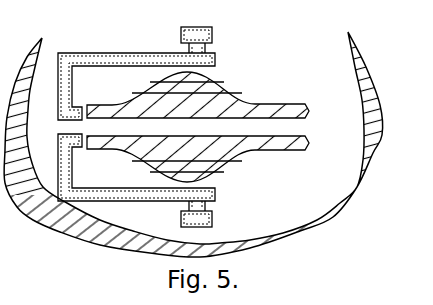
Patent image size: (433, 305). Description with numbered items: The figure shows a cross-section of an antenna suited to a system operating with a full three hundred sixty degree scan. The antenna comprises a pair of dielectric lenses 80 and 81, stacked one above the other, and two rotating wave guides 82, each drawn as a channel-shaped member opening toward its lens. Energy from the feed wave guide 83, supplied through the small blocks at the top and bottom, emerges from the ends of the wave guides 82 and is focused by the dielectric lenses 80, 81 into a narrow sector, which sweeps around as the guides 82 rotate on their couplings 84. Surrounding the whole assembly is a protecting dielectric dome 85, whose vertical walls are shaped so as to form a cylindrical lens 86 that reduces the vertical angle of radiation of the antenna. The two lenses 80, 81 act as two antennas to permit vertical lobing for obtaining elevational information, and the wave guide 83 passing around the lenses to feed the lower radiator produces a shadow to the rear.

The dielectric lens 80 is at (249, 91).
The dielectric lens 81 is at (270, 150).
The rotating wave guide 82 is at (74, 88).
The wave guide 83 is at (209, 32).
The coupling 84 is at (206, 48).
The protecting dielectric dome 85 is at (332, 222).
The cylindrical lens 86 is at (211, 144).